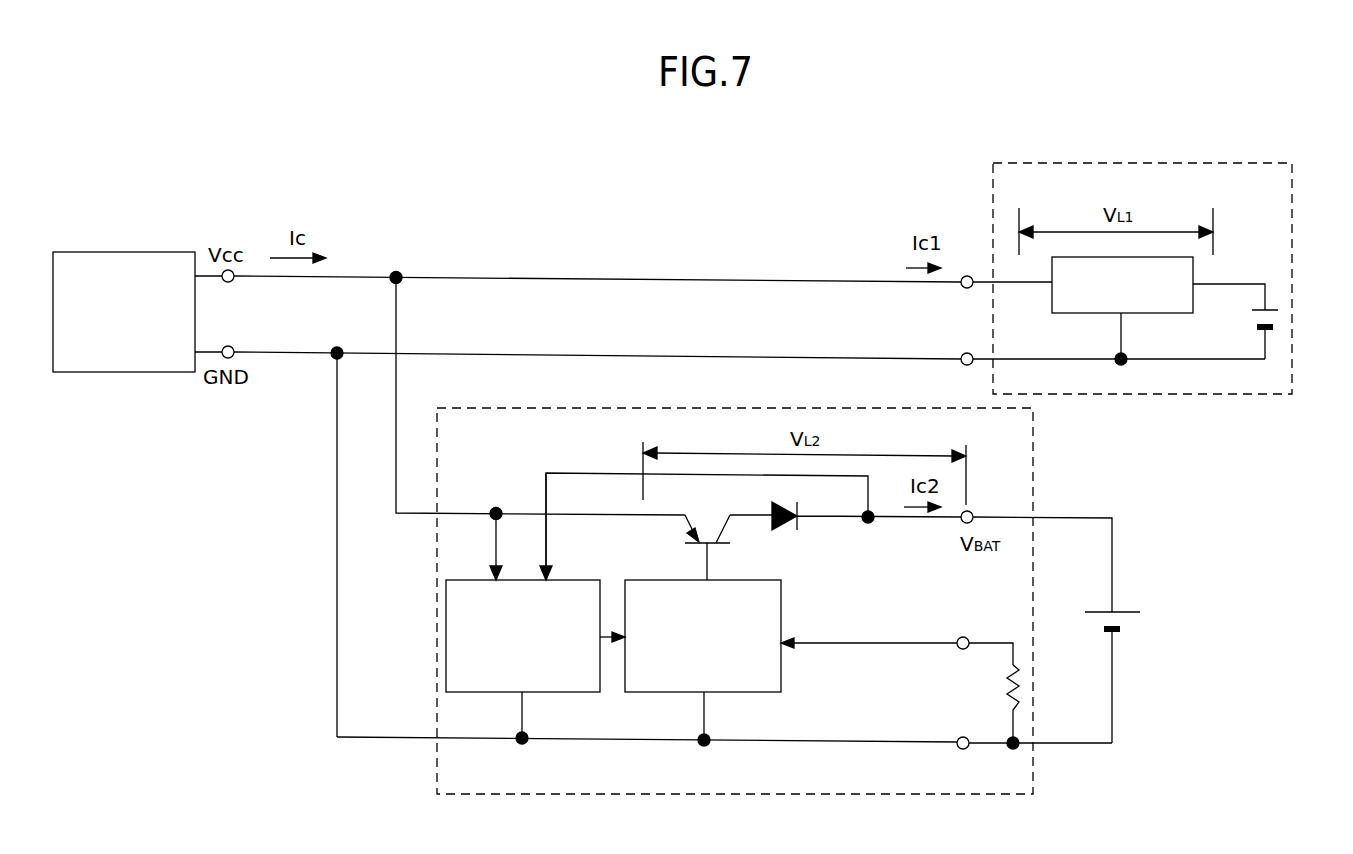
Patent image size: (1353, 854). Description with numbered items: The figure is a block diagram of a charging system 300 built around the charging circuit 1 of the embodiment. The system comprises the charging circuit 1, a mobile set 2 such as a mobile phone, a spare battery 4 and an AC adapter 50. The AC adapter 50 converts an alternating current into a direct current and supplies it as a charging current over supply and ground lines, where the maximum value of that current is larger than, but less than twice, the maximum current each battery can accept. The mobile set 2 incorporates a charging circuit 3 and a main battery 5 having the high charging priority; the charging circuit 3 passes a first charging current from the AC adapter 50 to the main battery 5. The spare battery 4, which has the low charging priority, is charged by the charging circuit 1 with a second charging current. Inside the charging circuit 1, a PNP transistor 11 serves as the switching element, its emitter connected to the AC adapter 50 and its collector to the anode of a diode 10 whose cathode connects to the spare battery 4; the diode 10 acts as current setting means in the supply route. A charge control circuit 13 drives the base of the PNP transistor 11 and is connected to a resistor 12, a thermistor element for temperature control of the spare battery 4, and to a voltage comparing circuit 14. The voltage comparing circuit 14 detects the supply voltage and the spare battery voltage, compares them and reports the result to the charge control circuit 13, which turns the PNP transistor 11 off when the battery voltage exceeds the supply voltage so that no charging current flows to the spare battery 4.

The charging circuit 1 is at (1035, 456).
The mobile set 2 is at (1293, 186).
The charging circuit 3 is at (1158, 314).
The spare battery 4 is at (1122, 613).
The main battery 5 is at (1256, 328).
The diode 10 is at (790, 524).
The PNP transistor 11 is at (692, 533).
The resistor 12 is at (1006, 686).
The charge control circuit 13 is at (781, 600).
The voltage comparing circuit 14 is at (585, 580).
The AC adapter 50 is at (172, 252).
The charging system 300 is at (1140, 125).